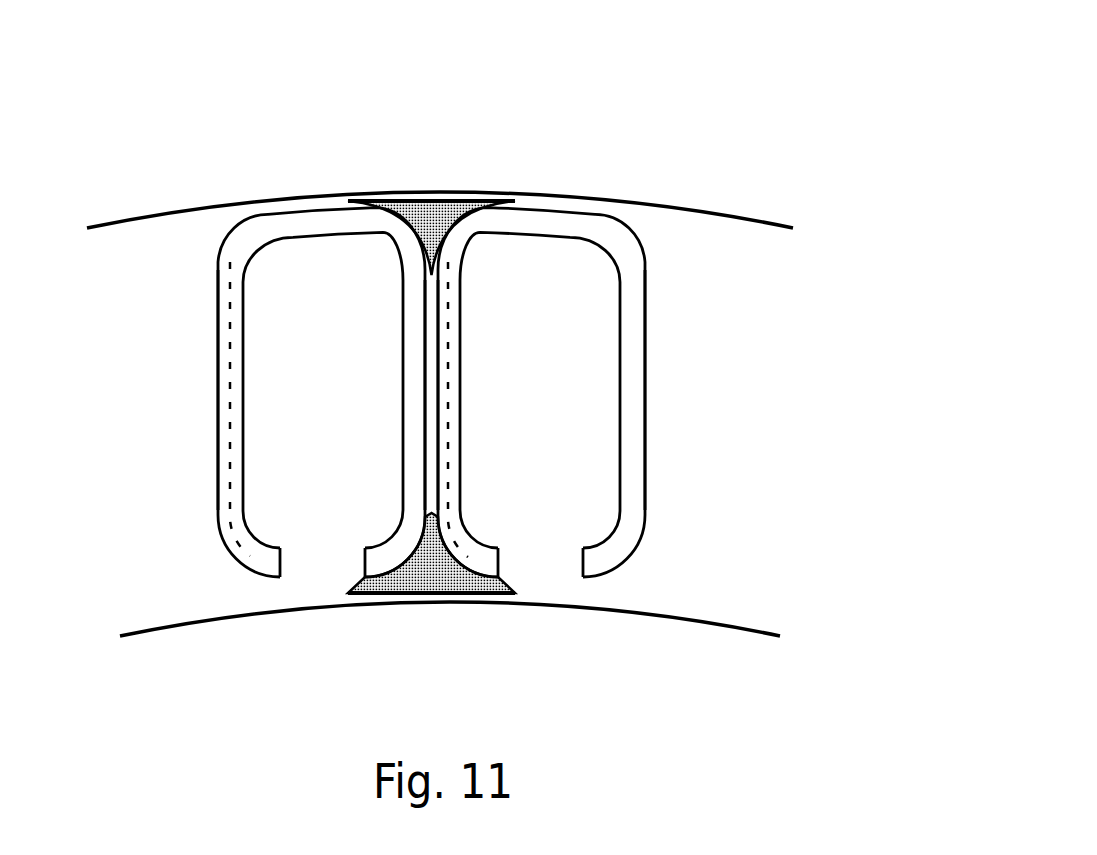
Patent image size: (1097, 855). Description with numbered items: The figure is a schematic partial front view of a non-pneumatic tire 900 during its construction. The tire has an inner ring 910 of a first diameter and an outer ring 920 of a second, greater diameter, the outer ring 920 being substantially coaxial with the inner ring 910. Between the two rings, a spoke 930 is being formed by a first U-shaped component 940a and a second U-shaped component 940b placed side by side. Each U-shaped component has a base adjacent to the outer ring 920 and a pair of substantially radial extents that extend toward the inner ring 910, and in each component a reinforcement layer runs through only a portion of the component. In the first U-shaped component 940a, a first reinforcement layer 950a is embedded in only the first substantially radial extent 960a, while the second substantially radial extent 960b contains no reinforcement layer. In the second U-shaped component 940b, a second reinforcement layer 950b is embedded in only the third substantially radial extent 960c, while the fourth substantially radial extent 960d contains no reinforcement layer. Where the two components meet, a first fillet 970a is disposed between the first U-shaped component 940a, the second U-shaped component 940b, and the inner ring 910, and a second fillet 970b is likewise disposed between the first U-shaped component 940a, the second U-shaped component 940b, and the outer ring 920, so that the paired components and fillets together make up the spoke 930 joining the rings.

The non-pneumatic tire 900 is at (759, 88).
The inner ring 910 is at (703, 623).
The outer ring 920 is at (753, 217).
The spoke 930 is at (500, 132).
The first U-shaped component 940a is at (292, 222).
The second U-shaped component 940b is at (580, 227).
The first reinforcement layer 950a is at (228, 397).
The second reinforcement layer 950b is at (448, 380).
The first substantially radial extent 960a is at (218, 437).
The second substantially radial extent 960b is at (413, 453).
The third substantially radial extent 960c is at (457, 445).
The fourth substantially radial extent 960d is at (643, 463).
The first fillet 970a is at (433, 557).
The second fillet 970b is at (428, 222).